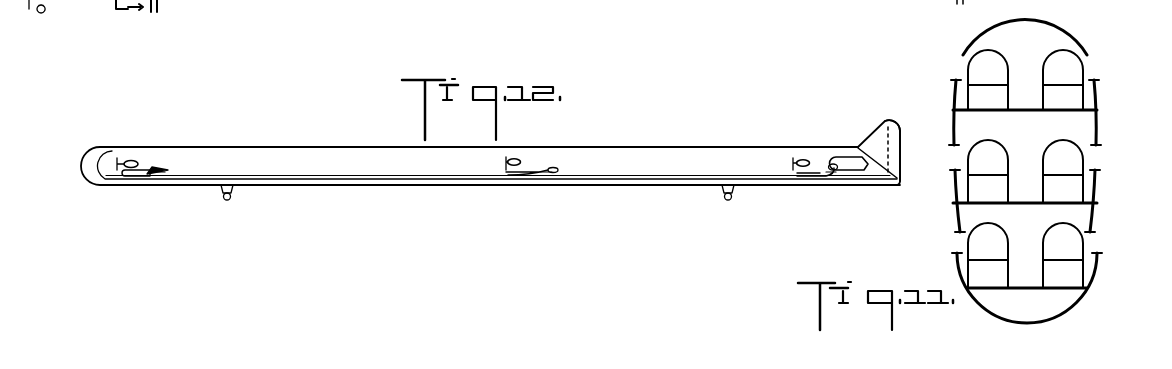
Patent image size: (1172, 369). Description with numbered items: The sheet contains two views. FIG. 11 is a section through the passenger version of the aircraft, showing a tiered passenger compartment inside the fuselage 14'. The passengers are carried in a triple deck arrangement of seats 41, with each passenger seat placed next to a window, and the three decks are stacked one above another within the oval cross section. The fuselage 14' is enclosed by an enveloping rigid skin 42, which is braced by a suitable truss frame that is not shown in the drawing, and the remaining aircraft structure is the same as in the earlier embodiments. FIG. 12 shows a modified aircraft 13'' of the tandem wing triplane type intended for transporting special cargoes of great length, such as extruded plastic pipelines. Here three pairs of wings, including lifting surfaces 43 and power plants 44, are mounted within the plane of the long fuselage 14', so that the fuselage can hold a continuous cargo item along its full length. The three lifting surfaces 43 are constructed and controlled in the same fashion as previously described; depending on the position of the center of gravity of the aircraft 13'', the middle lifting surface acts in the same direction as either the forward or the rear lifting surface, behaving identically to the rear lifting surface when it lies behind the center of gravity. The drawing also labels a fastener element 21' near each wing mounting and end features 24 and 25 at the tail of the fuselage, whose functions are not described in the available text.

In FIG. 12, the aircraft 13'' is at (490, 145).
In FIG. 11, the fuselage 14' is at (1037, 169).
In FIG. 12, the clip fastener 21' is at (493, 143).
In FIG. 12, the end tab 24 is at (877, 130).
In FIG. 12, the tab edge 25 is at (902, 130).
In FIG. 11, the seats 41 is at (1052, 70).
In FIG. 11, the rigid skin 42 is at (1098, 122).
In FIG. 12, the lifting surfaces 43 is at (134, 177).
In FIG. 12, the power plants 44 is at (135, 160).